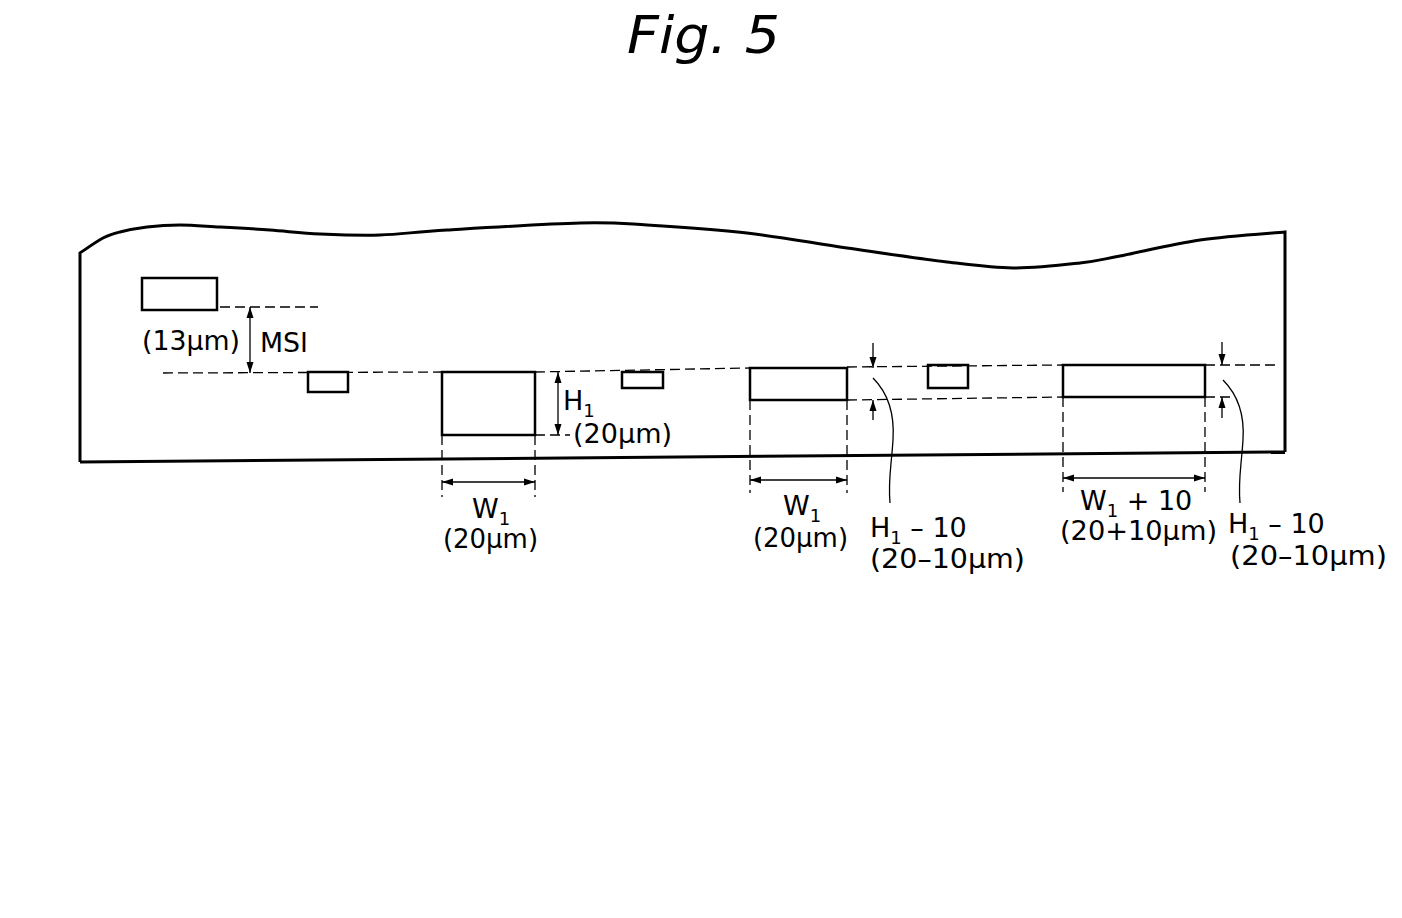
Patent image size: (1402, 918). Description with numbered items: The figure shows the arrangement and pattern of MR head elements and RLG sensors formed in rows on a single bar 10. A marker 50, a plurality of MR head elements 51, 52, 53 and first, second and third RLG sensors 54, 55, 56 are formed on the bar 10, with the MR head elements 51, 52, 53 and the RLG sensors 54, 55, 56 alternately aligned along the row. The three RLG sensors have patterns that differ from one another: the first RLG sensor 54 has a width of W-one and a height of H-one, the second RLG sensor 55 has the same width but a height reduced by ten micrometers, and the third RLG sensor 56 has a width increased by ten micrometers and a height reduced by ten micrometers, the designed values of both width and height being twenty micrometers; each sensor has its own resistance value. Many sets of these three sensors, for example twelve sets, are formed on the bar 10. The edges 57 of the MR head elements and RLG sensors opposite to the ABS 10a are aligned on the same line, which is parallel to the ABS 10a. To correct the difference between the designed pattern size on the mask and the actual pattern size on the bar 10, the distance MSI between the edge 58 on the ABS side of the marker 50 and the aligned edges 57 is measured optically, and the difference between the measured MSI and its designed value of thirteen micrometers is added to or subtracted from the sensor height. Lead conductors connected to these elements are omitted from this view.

The bar 10 is at (112, 443).
The ABS 10a is at (175, 464).
The marker 50 is at (187, 292).
The MR head element 51 is at (333, 372).
The MR head element 52 is at (642, 370).
The MR head element 53 is at (952, 365).
The first RLG sensor 54 is at (495, 370).
The second RLG sensor 55 is at (812, 367).
The third RLG sensor 56 is at (1145, 363).
The edges 57 is at (205, 378).
The edge 58 is at (290, 302).